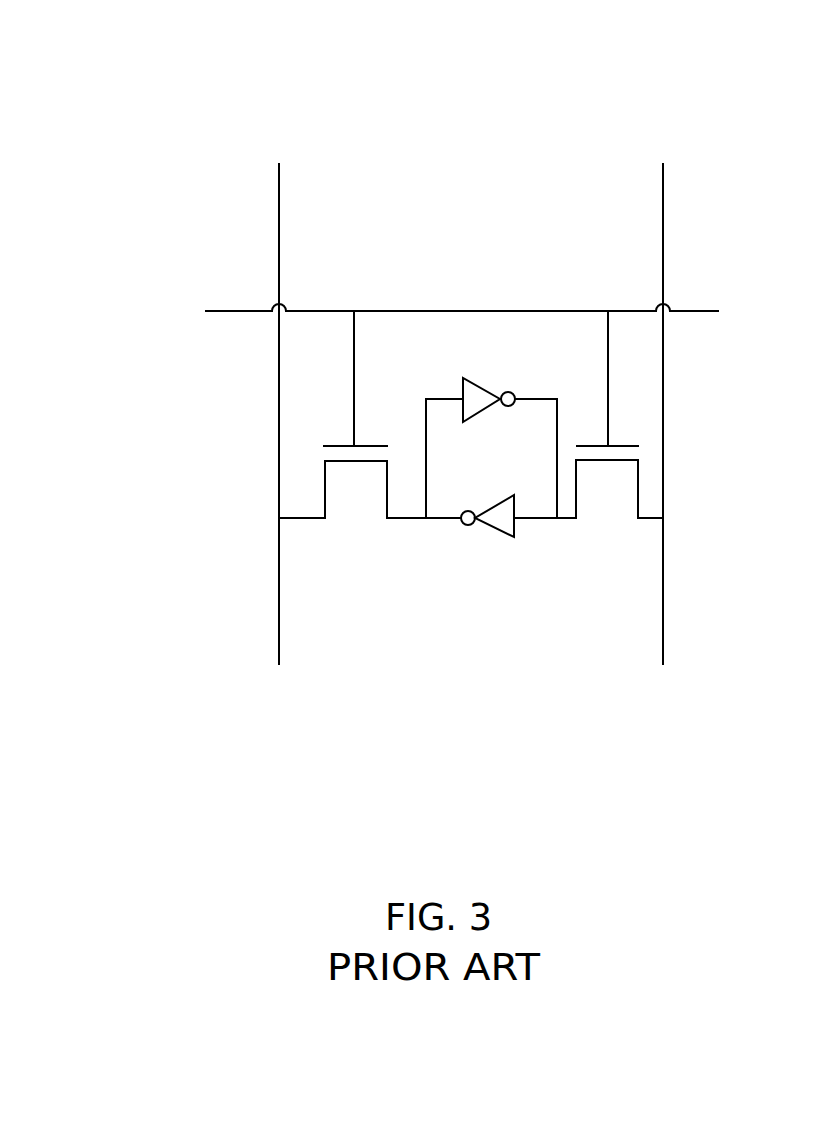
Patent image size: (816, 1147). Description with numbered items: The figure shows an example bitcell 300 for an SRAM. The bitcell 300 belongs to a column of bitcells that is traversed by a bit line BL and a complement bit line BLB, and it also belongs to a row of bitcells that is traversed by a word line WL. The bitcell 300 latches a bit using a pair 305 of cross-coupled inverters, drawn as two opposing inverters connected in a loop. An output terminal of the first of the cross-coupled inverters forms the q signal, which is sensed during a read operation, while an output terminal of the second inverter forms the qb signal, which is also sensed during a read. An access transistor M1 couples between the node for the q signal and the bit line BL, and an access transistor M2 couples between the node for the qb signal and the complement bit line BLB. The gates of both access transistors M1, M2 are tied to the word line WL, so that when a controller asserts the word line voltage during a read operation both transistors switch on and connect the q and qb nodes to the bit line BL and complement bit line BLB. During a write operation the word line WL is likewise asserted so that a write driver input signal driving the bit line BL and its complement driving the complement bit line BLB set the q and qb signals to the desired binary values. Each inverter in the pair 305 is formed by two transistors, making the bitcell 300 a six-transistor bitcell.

The bitcell 300 is at (152, 70).
The pair of cross-coupled inverters 305 is at (414, 361).
The access transistor M1 is at (610, 414).
The access transistor M2 is at (352, 414).
The bit line BL is at (657, 398).
The complement bit line BLB is at (278, 395).
The word line WL is at (462, 288).
The q signal q is at (537, 481).
The qb signal qb is at (435, 481).